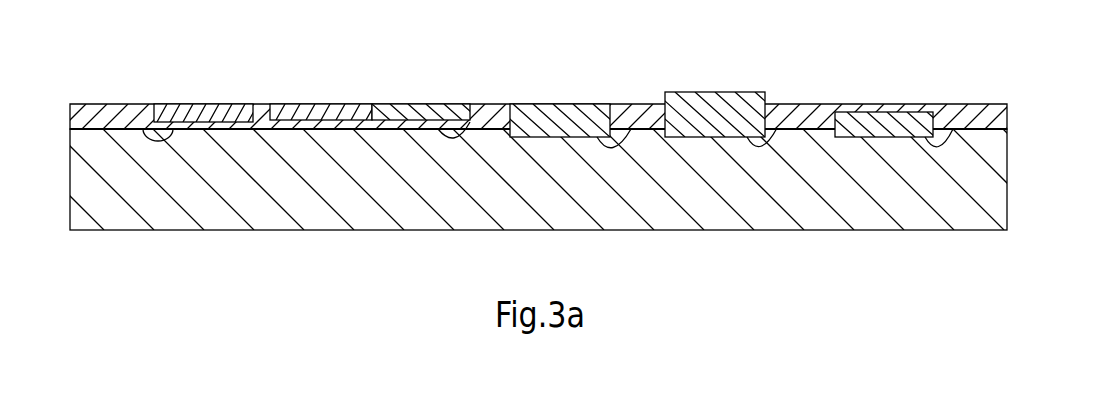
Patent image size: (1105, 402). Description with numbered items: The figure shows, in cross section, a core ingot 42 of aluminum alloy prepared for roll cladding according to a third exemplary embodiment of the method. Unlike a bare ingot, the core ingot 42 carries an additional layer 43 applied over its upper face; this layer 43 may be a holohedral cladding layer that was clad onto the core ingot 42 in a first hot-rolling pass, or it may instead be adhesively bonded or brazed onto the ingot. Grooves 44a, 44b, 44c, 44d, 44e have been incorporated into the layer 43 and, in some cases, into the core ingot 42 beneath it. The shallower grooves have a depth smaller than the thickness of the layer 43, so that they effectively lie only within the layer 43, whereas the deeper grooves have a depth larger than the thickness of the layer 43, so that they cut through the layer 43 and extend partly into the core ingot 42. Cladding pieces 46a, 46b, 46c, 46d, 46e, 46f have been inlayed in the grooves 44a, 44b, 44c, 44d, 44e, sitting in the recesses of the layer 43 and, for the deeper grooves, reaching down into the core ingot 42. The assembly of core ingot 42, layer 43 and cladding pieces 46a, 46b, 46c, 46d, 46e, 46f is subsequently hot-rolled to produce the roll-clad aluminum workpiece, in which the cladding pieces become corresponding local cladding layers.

The core ingot 42 is at (865, 215).
The layer 43 is at (987, 117).
The groove 44a is at (143, 129).
The groove 44b is at (470, 122).
The groove 44c is at (632, 129).
The groove 44d is at (777, 128).
The groove 44e is at (953, 129).
The cladding piece 46a is at (208, 112).
The cladding piece 46b is at (318, 112).
The cladding piece 46c is at (420, 112).
The cladding piece 46d is at (568, 112).
The cladding piece 46e is at (720, 100).
The cladding piece 46f is at (890, 120).